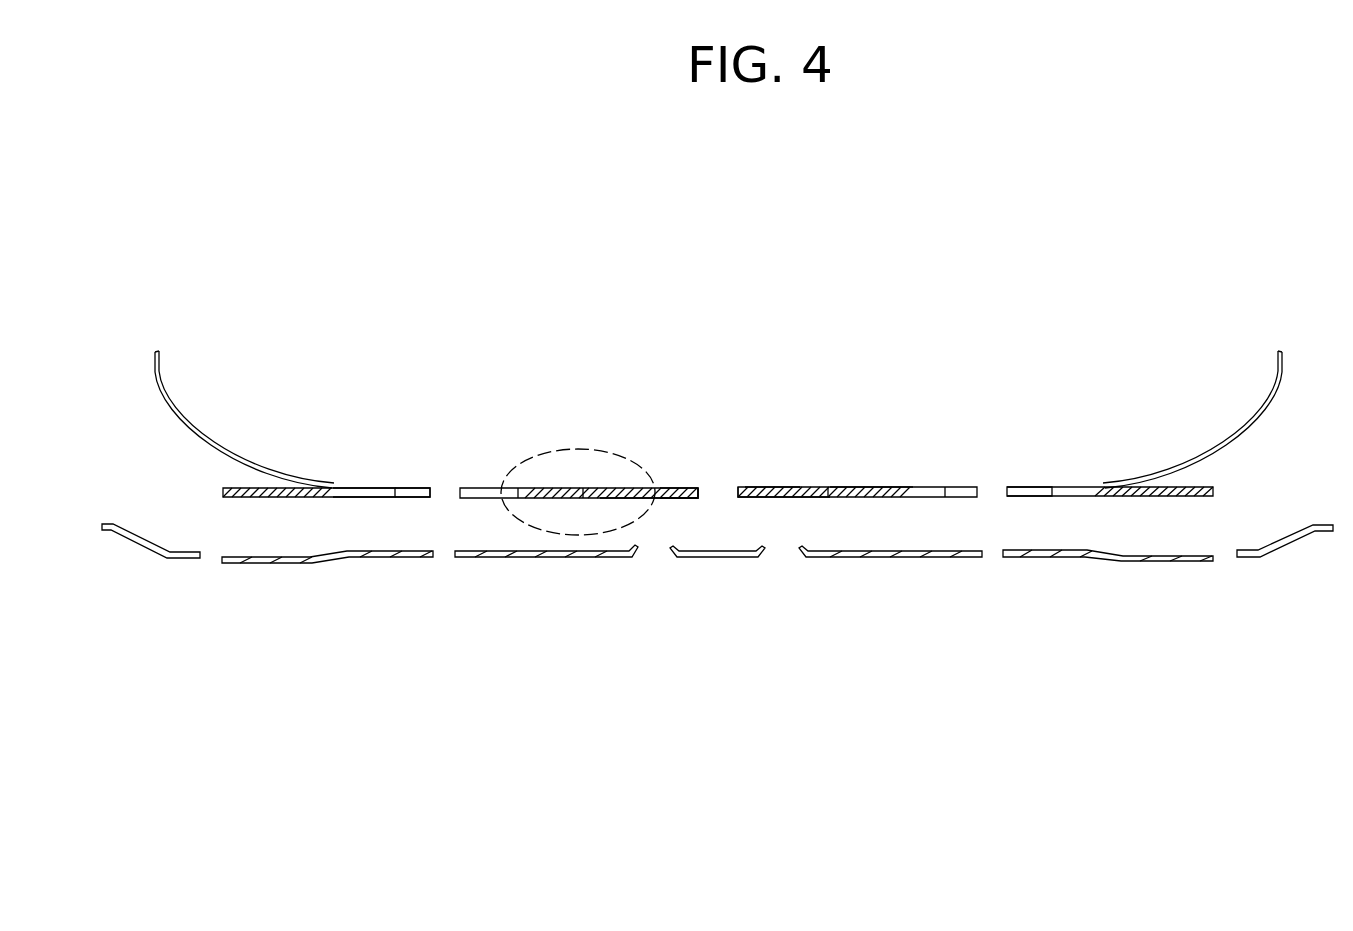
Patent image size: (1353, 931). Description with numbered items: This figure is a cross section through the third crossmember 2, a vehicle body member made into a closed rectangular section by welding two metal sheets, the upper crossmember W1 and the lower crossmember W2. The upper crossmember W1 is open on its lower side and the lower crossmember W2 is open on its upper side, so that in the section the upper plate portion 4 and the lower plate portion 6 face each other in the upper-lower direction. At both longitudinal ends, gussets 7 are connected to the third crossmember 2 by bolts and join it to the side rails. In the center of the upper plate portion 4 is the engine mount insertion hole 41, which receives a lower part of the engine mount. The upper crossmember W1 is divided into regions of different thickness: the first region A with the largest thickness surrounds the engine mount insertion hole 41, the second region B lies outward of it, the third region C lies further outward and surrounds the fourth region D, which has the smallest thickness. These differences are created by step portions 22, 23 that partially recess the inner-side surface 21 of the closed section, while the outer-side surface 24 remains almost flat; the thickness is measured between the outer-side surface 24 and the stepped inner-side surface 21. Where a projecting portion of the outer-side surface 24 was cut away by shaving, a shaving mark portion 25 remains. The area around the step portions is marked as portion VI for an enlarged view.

The third crossmember 2 is at (350, 477).
The upper plate portion 4 is at (795, 487).
The lower plate portion 6 is at (567, 558).
The gusset 7 is at (229, 460).
The inner-side surface 21 is at (788, 496).
The step portion 22 is at (633, 498).
The step portion 23 is at (520, 498).
The outer-side surface 24 is at (767, 487).
The shaving mark portion 25 is at (418, 488).
The engine mount insertion hole 41 is at (738, 492).
The first region A is at (680, 488).
The second region B is at (583, 488).
The third region C is at (518, 488).
The fourth region D is at (395, 488).
The portion VI is at (633, 462).
The upper crossmember W1 is at (878, 487).
The lower crossmember W2 is at (867, 558).